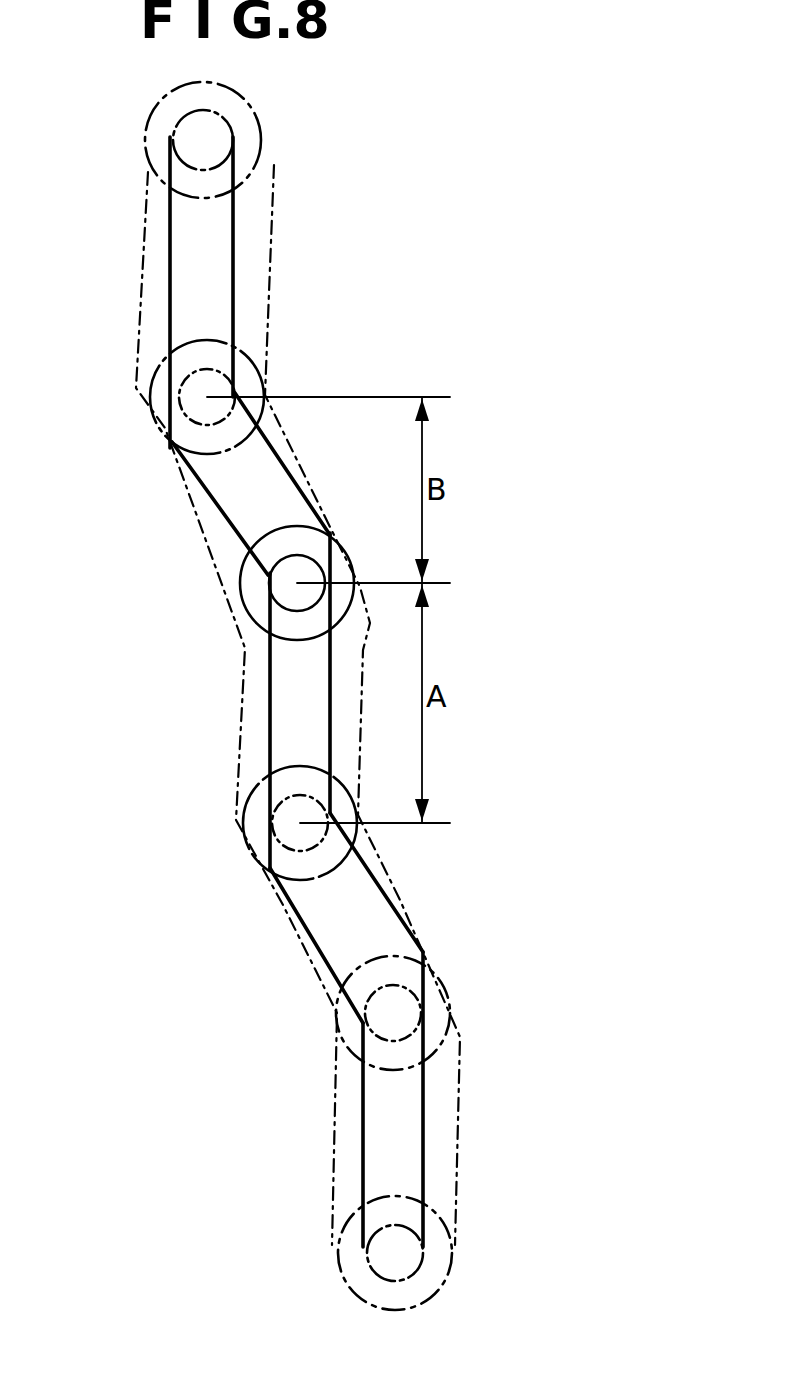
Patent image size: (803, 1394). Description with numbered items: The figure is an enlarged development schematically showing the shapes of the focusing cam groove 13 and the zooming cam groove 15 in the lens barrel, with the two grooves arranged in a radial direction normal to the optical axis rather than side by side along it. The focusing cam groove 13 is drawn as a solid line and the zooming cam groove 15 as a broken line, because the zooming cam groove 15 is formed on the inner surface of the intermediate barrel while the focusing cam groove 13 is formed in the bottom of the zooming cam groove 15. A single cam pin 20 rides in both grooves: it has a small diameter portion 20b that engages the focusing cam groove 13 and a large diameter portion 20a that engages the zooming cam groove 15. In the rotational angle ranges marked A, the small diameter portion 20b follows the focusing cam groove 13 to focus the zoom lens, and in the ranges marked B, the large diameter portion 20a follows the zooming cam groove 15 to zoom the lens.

The focusing cam groove 13 is at (225, 218).
The zooming cam groove 15 is at (262, 287).
The cam pin 20 is at (122, 535).
The large diameter portion 20a is at (265, 533).
The small diameter portion 20b is at (262, 542).